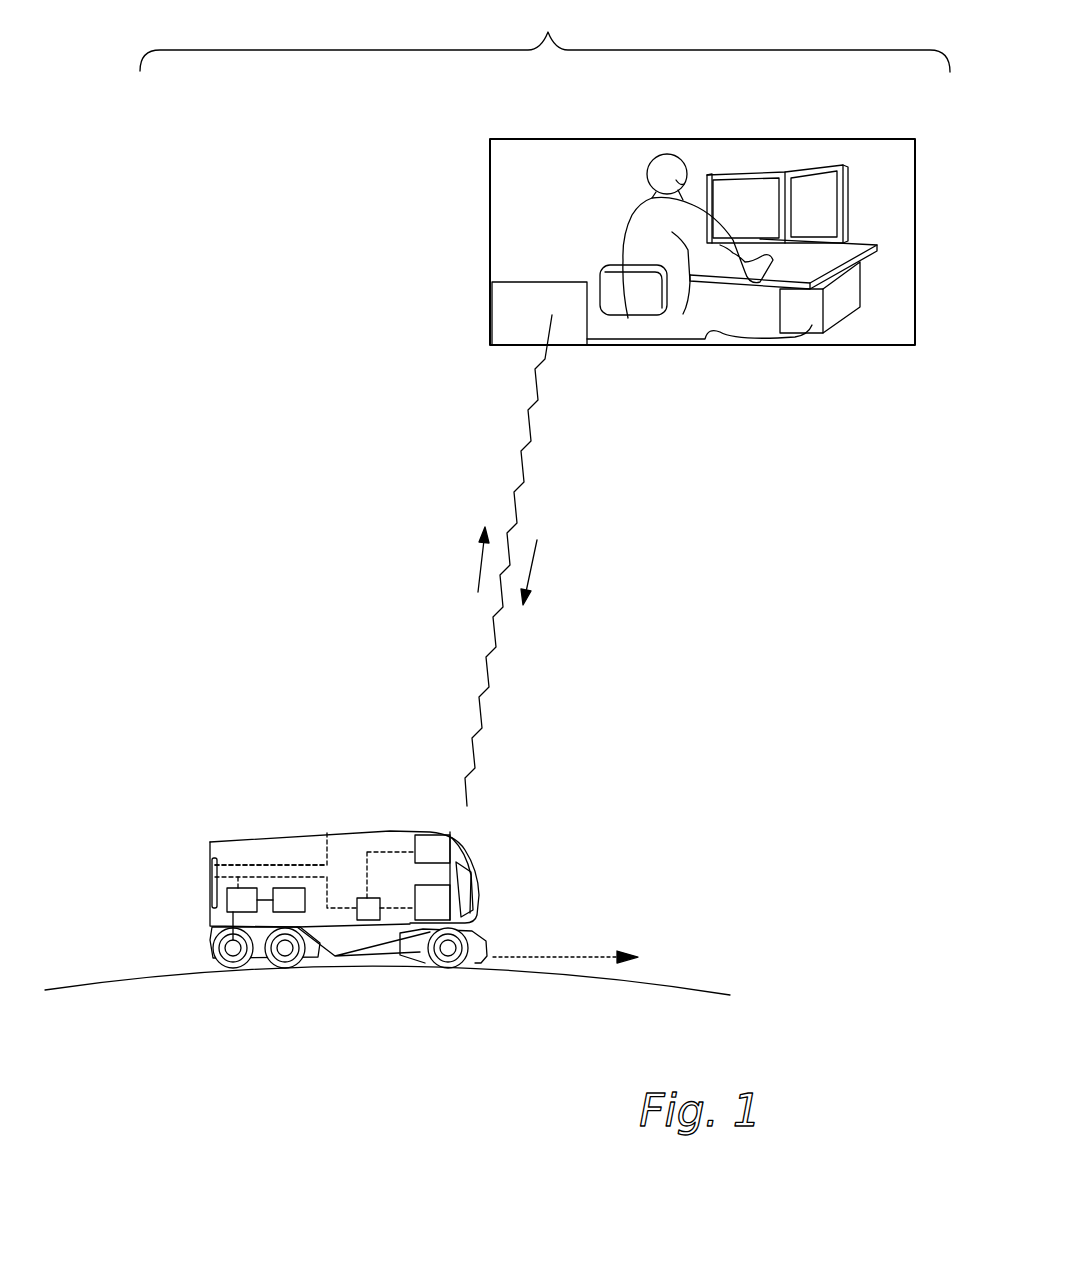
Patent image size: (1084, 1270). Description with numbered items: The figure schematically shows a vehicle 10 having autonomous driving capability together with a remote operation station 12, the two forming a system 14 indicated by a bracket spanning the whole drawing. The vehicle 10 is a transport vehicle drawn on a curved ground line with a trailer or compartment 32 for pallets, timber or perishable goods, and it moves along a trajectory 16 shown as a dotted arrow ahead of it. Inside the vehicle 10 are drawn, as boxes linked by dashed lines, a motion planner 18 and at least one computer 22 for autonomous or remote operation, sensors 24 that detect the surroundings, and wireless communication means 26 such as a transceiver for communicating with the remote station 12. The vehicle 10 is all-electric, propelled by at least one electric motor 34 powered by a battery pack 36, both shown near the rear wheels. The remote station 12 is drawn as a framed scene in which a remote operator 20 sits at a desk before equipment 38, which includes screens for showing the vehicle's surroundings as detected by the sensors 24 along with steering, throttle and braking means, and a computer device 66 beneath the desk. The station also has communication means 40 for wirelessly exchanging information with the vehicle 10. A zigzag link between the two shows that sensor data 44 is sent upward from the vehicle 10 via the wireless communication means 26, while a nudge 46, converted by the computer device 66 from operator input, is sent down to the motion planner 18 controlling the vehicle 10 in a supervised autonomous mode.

The vehicle 10 is at (352, 866).
The remote operation station 12 is at (777, 139).
The system 14 is at (545, 36).
The trajectory 16 is at (548, 957).
The motion planner 18 is at (365, 952).
The remote operator 20 is at (643, 222).
The computer 22 is at (366, 917).
The sensors 24 is at (435, 908).
The wireless communication means 26 is at (435, 853).
The trailer or compartment 32 is at (258, 850).
The electric motor 34 is at (240, 905).
The battery pack 36 is at (281, 898).
The equipment 38 is at (845, 208).
The communication means 40 is at (511, 303).
The sensor data 44 is at (477, 563).
The nudge 46 is at (533, 565).
The computer device 66 is at (807, 305).